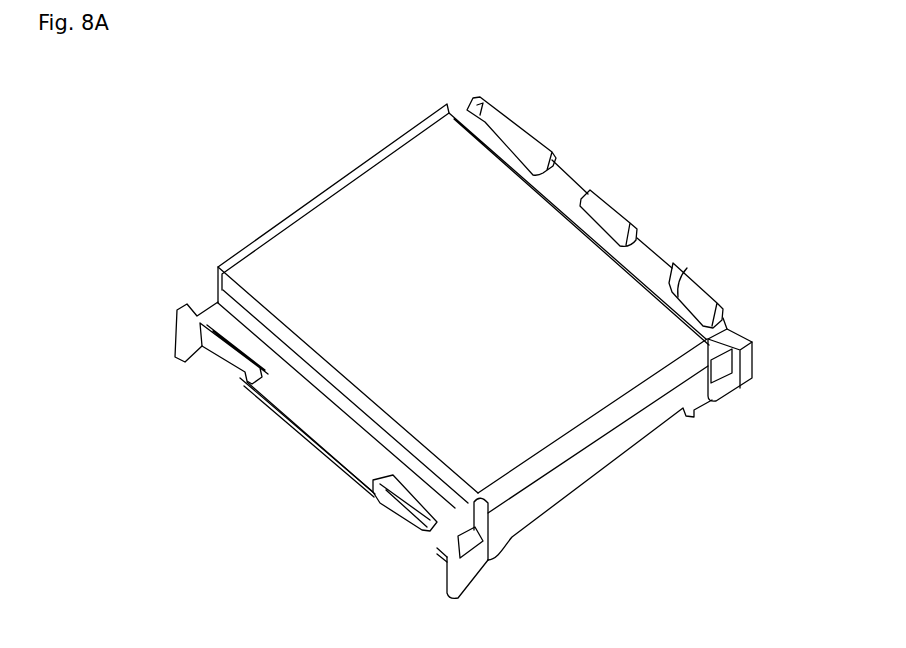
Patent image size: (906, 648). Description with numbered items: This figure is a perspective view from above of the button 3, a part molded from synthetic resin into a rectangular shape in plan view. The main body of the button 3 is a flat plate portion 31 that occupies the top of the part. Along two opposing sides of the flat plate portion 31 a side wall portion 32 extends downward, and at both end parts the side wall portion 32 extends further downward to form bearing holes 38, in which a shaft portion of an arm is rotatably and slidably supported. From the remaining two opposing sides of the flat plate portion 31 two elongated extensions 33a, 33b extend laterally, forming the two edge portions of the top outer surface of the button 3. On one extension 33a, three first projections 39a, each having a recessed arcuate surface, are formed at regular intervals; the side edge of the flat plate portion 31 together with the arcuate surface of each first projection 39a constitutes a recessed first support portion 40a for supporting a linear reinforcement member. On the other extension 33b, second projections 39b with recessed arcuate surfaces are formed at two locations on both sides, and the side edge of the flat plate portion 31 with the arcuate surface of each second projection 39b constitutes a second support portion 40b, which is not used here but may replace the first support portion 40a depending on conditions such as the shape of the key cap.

The button 3 is at (317, 247).
The flat plate portion 31 is at (398, 193).
The side wall portion 32 is at (610, 448).
The extension 33a is at (568, 180).
The extension 33b is at (295, 414).
The bearing hole 38 is at (718, 392).
The first projection 39a is at (523, 127).
The second projection 39b is at (217, 337).
The first support portion 40a is at (687, 272).
The second support portion 40b is at (332, 433).